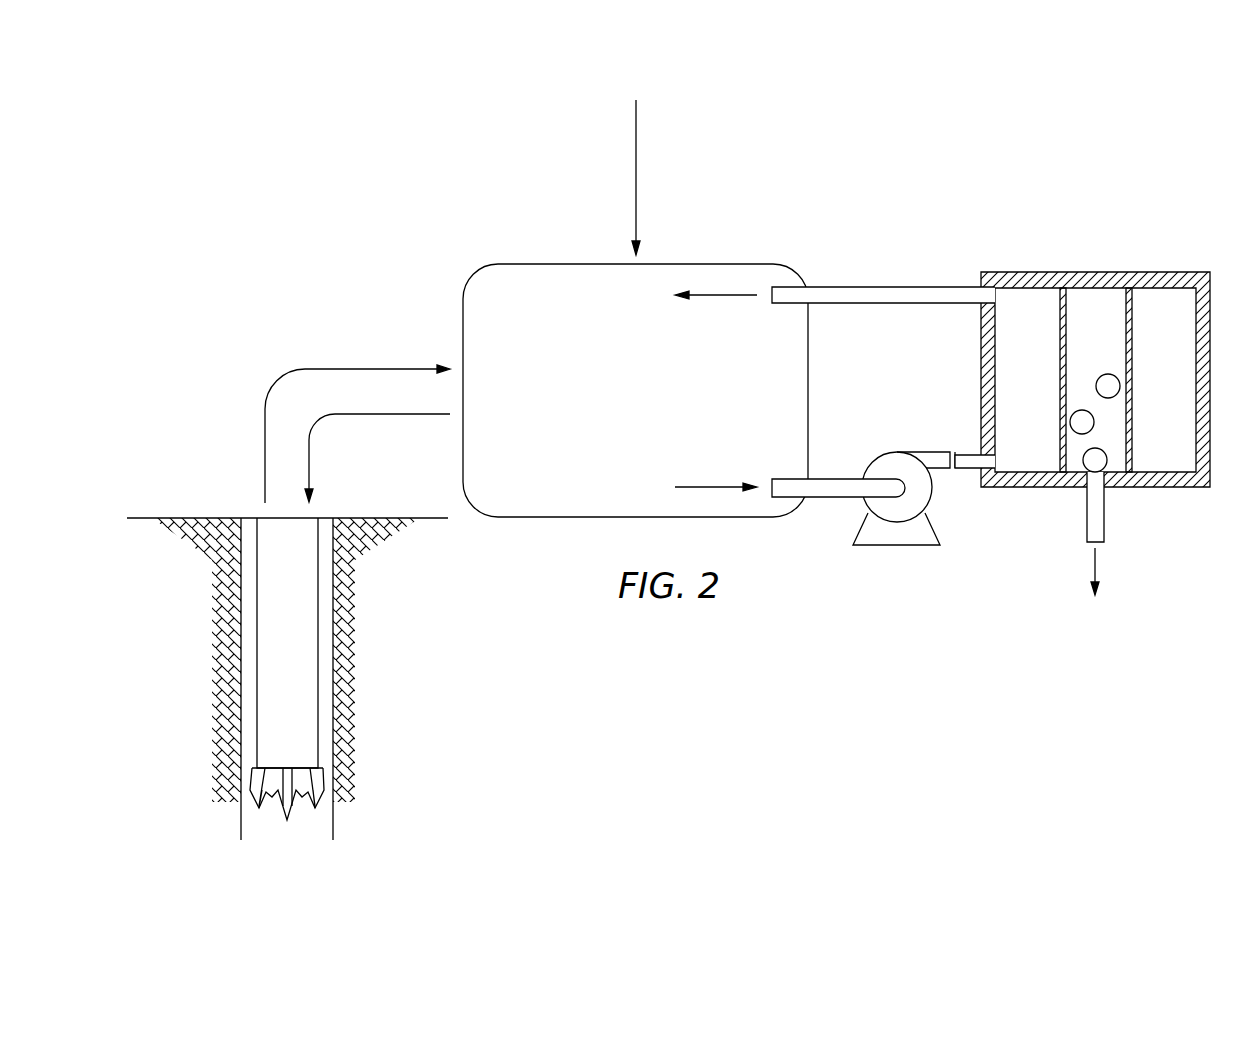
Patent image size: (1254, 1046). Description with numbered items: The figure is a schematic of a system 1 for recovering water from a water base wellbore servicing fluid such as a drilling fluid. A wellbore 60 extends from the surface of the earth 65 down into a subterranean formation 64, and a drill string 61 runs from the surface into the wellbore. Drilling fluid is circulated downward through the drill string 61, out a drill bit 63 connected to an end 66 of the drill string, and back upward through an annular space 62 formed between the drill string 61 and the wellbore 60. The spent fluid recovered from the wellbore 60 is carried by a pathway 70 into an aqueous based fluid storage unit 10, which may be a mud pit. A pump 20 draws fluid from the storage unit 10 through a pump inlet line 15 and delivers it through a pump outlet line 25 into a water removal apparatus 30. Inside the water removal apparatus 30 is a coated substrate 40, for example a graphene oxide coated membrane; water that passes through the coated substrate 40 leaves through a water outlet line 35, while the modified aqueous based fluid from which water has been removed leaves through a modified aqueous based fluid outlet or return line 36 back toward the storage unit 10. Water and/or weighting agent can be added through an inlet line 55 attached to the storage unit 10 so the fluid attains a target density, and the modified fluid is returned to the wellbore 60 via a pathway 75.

The system 1 is at (1100, 100).
The aqueous based fluid storage unit 10 is at (625, 398).
The pump inlet line 15 is at (836, 498).
The pump 20 is at (888, 462).
The pump outlet line 25 is at (963, 470).
The water removal apparatus 30 is at (1058, 250).
The water outlet line 35 is at (1106, 508).
The modified aqueous based fluid outlet line 36 is at (893, 287).
The coated substrate 40 is at (1075, 300).
The water and/or weighting agent inlet line 55 is at (636, 176).
The wellbore 60 is at (345, 603).
The drill string 61 is at (318, 702).
The annular space 62 is at (325, 656).
The drill bit 63 is at (312, 795).
The formation 64 is at (163, 641).
The surface of the earth 65 is at (377, 518).
The end of the drill string 66 is at (285, 757).
The pathway 70 is at (333, 369).
The pathway 75 is at (382, 414).